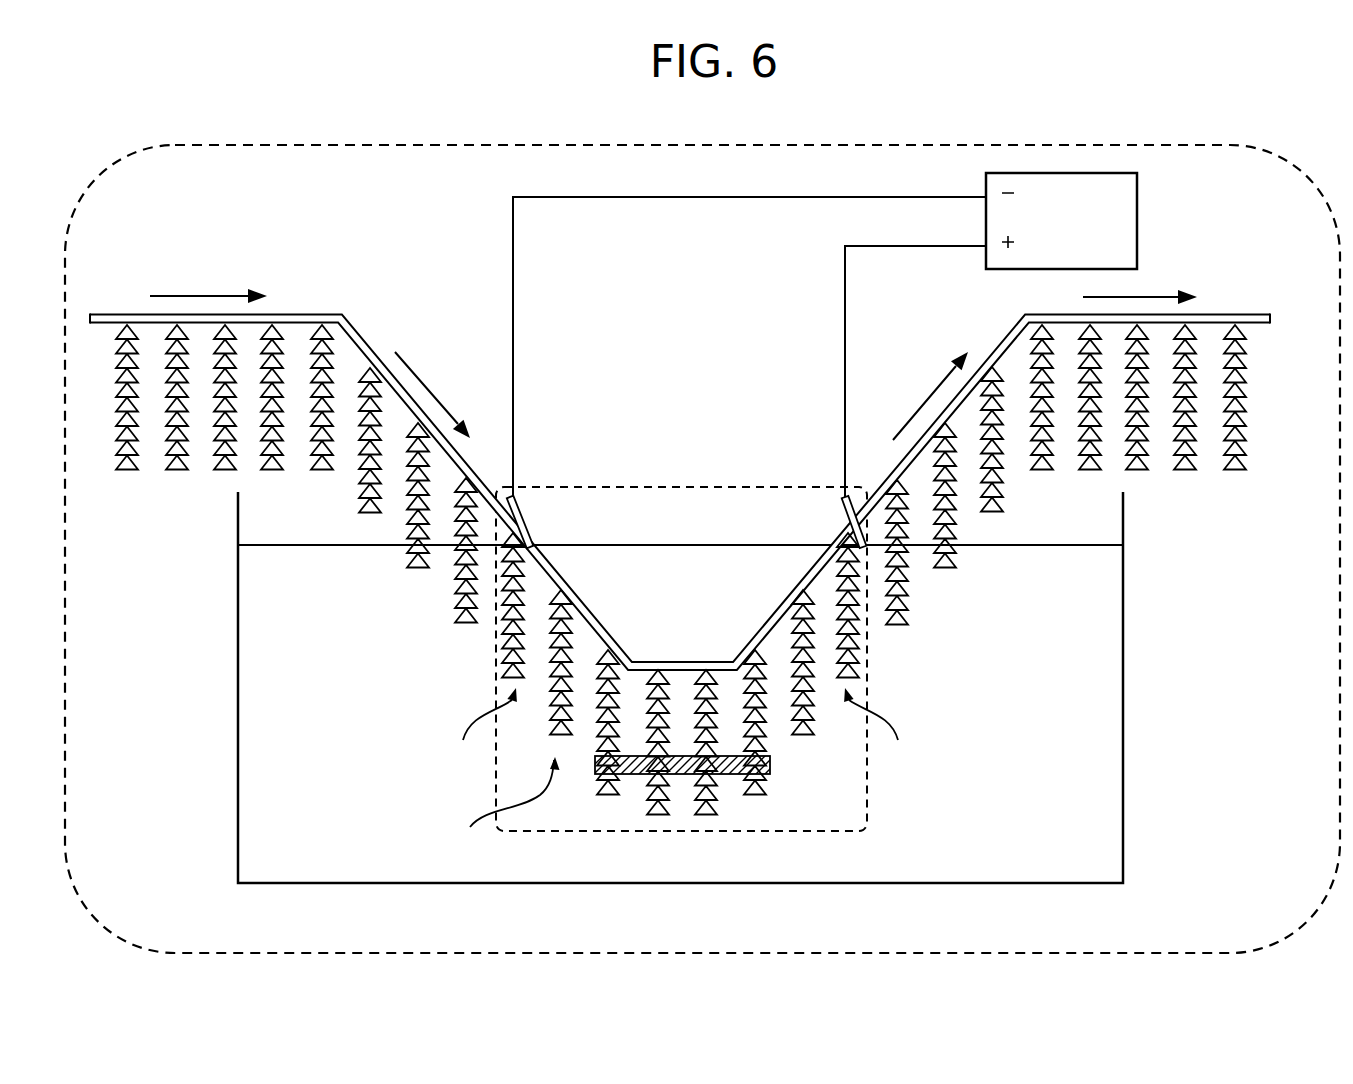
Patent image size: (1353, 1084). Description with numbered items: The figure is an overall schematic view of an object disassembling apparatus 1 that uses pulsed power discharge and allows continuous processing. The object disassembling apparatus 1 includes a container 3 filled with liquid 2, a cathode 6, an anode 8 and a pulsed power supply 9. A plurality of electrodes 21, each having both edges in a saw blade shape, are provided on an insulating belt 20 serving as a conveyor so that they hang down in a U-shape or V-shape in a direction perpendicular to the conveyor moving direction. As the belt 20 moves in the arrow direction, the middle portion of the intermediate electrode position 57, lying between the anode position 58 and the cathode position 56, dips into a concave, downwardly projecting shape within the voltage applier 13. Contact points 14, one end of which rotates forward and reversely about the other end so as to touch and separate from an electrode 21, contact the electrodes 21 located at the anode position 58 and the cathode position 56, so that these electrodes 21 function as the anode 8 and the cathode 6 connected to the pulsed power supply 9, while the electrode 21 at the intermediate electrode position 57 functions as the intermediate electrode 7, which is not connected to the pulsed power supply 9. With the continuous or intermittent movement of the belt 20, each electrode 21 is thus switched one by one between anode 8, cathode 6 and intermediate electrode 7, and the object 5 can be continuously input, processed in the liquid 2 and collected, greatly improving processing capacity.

The object disassembling apparatus 1 is at (158, 140).
The liquid 2 is at (1100, 815).
The container 3 is at (1123, 690).
The object 5 is at (680, 755).
The cathode 6 is at (507, 663).
The intermediate electrode 7 is at (561, 737).
The anode 8 is at (860, 663).
The pulsed power supply 9 is at (1137, 225).
The voltage applier 13 is at (690, 487).
The contact points 14 is at (532, 524).
The insulating belt 20 is at (355, 332).
The electrodes 21 is at (370, 512).
The cathode position 56 is at (479, 731).
The intermediate electrode position 57 is at (504, 809).
The anode position 58 is at (878, 732).